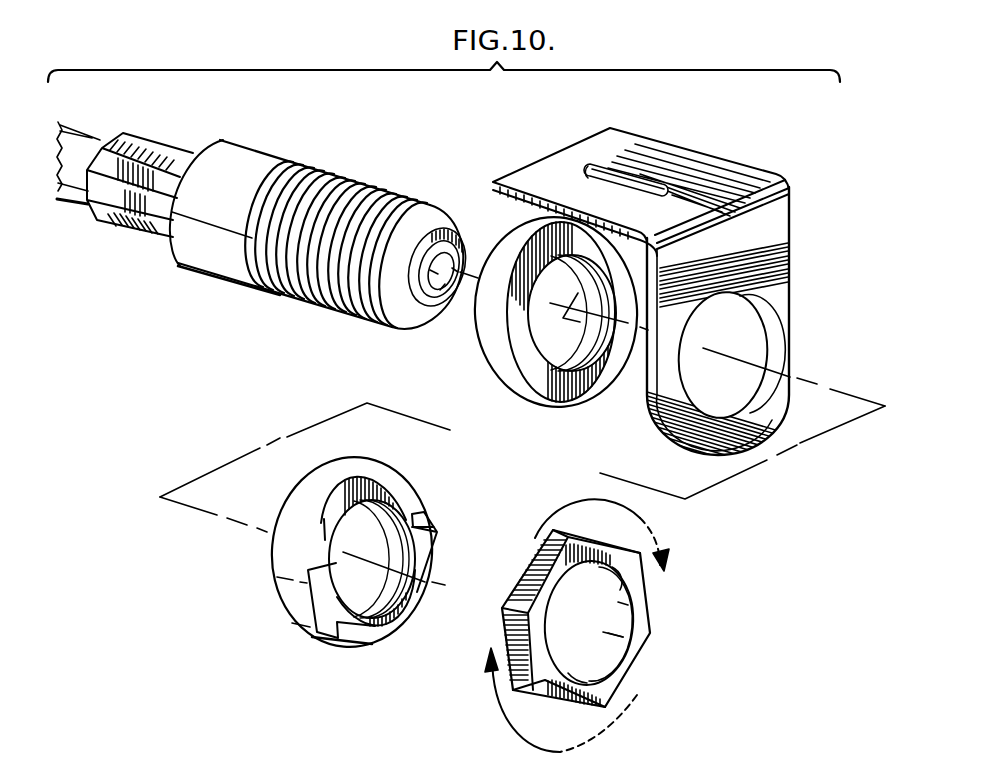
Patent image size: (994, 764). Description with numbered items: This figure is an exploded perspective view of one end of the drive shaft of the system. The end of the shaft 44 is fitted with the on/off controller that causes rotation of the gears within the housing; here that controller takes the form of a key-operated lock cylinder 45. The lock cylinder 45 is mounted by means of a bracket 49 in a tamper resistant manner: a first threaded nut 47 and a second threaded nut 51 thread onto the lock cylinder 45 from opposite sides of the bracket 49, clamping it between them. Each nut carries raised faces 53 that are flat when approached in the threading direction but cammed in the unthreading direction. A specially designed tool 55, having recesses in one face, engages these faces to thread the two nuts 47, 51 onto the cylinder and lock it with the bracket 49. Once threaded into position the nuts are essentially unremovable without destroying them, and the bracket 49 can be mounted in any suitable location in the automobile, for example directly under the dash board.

The end of the shaft 44 is at (162, 150).
The lock cylinder 45 is at (270, 163).
The first threaded nut 47 is at (487, 327).
The bracket 49 is at (770, 233).
The second threaded nut 51 is at (373, 472).
The raised faces 53 is at (431, 523).
The tool 55 is at (647, 580).